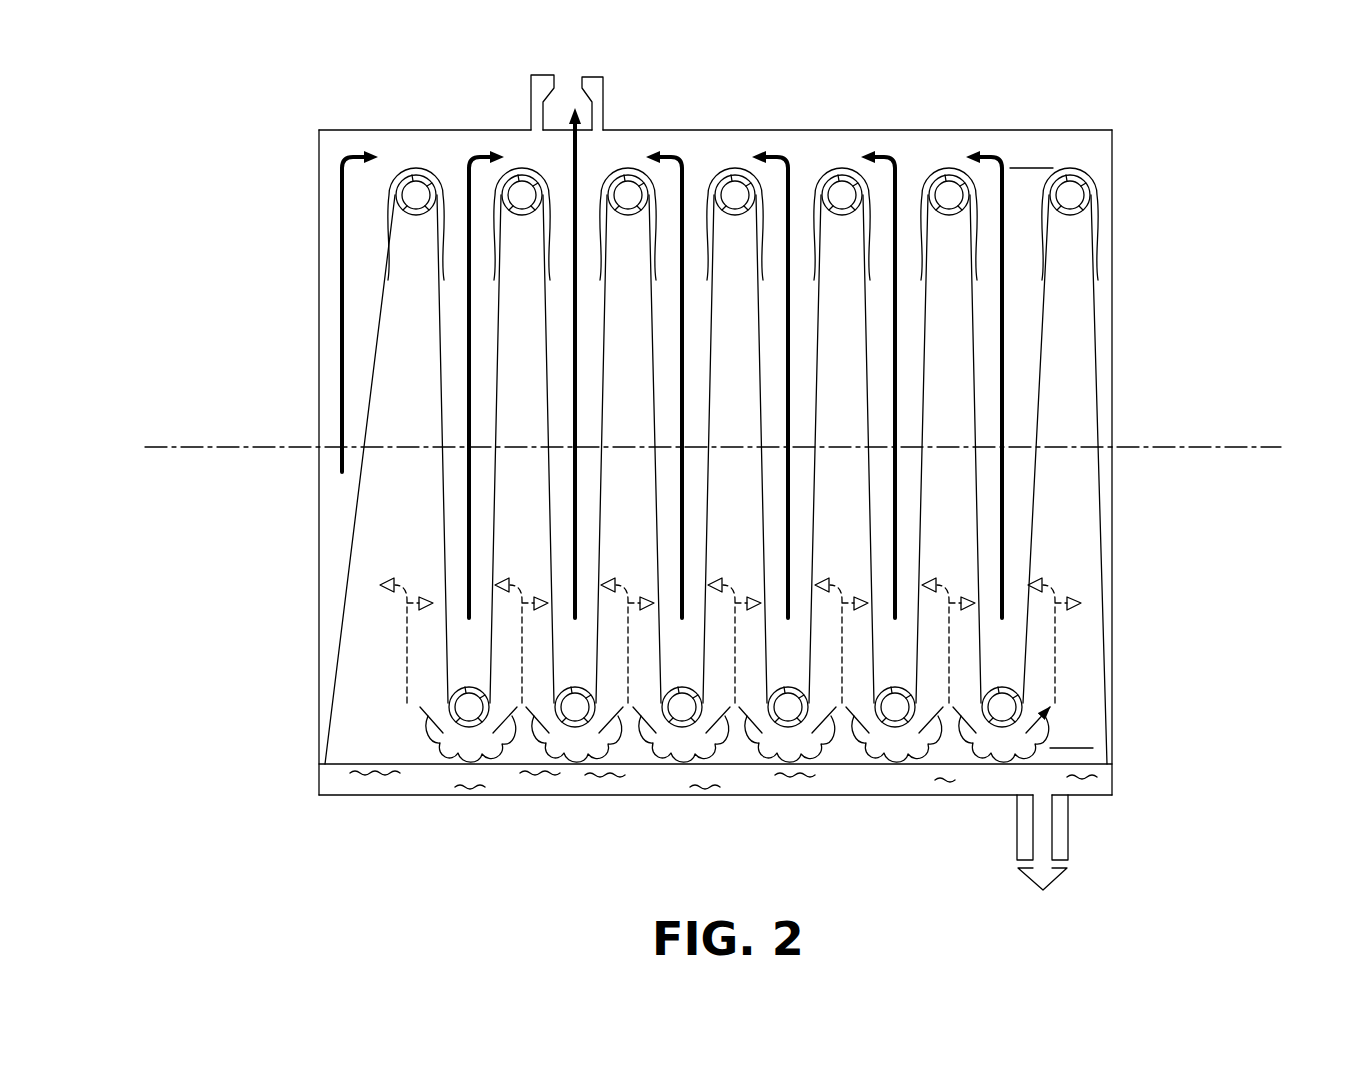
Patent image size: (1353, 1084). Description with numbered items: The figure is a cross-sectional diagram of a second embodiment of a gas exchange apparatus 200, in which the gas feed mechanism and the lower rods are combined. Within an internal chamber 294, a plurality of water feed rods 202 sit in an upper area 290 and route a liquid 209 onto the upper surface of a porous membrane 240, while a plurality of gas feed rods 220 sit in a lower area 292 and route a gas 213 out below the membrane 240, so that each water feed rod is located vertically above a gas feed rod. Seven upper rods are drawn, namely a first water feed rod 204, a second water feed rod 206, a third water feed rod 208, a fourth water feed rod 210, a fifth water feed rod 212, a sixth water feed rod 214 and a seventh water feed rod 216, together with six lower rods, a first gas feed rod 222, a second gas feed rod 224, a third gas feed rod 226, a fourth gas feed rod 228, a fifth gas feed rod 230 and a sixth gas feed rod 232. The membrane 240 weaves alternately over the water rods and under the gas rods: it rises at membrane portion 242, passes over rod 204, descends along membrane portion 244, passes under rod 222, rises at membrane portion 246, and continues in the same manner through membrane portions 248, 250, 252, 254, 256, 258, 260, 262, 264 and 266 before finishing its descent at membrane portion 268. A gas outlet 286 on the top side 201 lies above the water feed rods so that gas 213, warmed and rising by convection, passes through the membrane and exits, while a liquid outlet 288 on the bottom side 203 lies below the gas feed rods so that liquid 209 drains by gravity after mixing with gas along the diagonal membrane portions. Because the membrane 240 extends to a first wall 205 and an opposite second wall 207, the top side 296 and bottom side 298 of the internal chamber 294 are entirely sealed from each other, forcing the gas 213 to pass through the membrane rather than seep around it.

The gas exchange apparatus 200 is at (186, 182).
The top side 201 is at (907, 126).
The water feed rods 202 is at (1123, 195).
The bottom side 203 is at (932, 800).
The first water feed rod 204 is at (425, 208).
The first wall 205 is at (314, 314).
The second water feed rod 206 is at (508, 196).
The second wall 207 is at (1116, 265).
The third water feed rod 208 is at (620, 190).
The liquid 209 is at (388, 198).
The fourth water feed rod 210 is at (746, 187).
The fifth water feed rod 212 is at (838, 190).
The gas 213 is at (433, 742).
The sixth water feed rod 214 is at (950, 190).
The seventh water feed rod 216 is at (1072, 190).
The gas feed rods 220 is at (1033, 700).
The first gas feed rod 222 is at (469, 707).
The second gas feed rod 224 is at (575, 707).
The third gas feed rod 226 is at (682, 707).
The fourth gas feed rod 228 is at (788, 707).
The fifth gas feed rod 230 is at (895, 707).
The sixth gas feed rod 232 is at (1002, 707).
The membrane 240 is at (1105, 433).
The membrane portion 242 is at (353, 530).
The membrane portion 244 is at (445, 548).
The membrane portion 246 is at (498, 367).
The membrane portion 248 is at (547, 402).
The membrane portion 250 is at (603, 462).
The membrane portion 252 is at (655, 472).
The membrane portion 254 is at (710, 472).
The membrane portion 256 is at (762, 458).
The membrane portion 258 is at (817, 418).
The membrane portion 260 is at (868, 390).
The membrane portion 262 is at (925, 358).
The membrane portion 264 is at (973, 320).
The membrane portion 266 is at (1038, 417).
The membrane portion 268 is at (1098, 370).
The gas outlet 286 is at (531, 98).
The liquid outlet 288 is at (1070, 835).
The upper area 290 is at (1229, 315).
The lower area 292 is at (1229, 623).
The internal chamber 294 is at (324, 374).
The top side of internal chamber 296 is at (1033, 155).
The bottom side of internal chamber 298 is at (1073, 735).